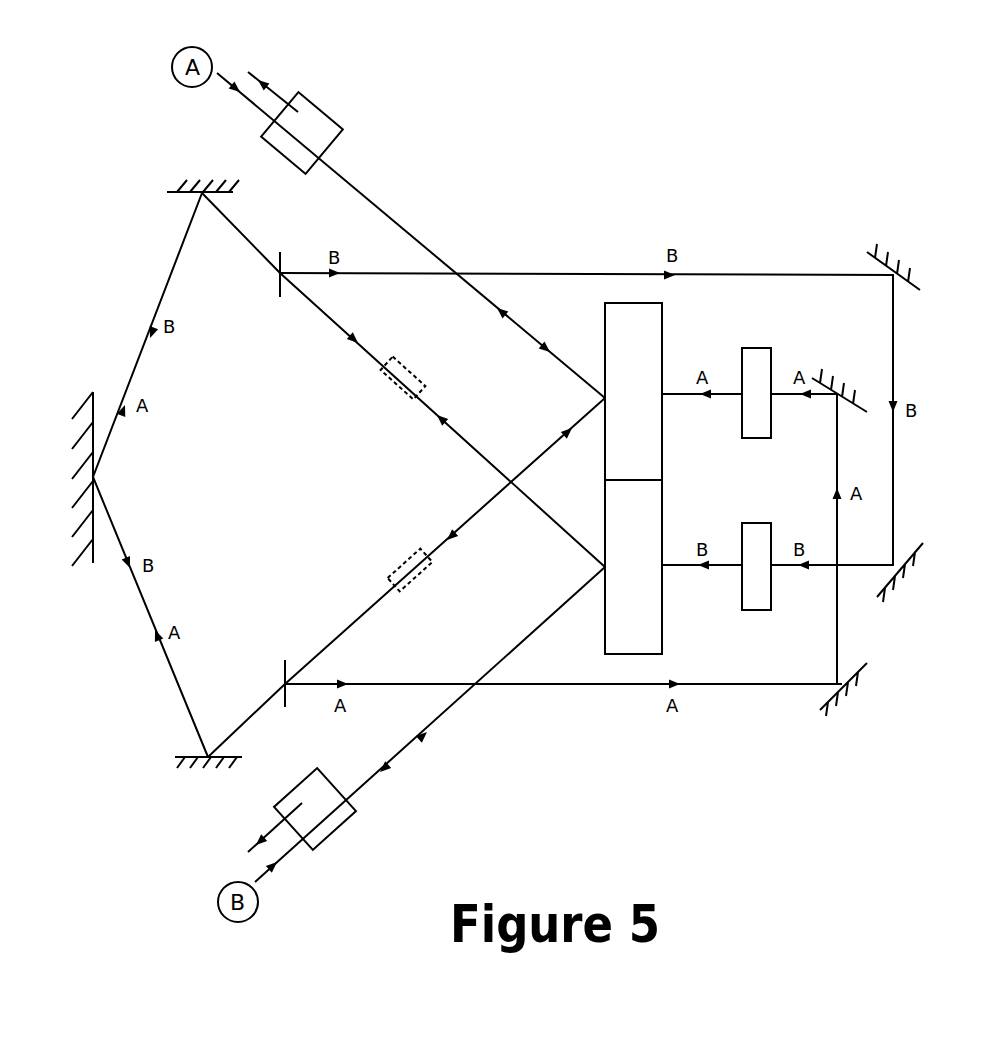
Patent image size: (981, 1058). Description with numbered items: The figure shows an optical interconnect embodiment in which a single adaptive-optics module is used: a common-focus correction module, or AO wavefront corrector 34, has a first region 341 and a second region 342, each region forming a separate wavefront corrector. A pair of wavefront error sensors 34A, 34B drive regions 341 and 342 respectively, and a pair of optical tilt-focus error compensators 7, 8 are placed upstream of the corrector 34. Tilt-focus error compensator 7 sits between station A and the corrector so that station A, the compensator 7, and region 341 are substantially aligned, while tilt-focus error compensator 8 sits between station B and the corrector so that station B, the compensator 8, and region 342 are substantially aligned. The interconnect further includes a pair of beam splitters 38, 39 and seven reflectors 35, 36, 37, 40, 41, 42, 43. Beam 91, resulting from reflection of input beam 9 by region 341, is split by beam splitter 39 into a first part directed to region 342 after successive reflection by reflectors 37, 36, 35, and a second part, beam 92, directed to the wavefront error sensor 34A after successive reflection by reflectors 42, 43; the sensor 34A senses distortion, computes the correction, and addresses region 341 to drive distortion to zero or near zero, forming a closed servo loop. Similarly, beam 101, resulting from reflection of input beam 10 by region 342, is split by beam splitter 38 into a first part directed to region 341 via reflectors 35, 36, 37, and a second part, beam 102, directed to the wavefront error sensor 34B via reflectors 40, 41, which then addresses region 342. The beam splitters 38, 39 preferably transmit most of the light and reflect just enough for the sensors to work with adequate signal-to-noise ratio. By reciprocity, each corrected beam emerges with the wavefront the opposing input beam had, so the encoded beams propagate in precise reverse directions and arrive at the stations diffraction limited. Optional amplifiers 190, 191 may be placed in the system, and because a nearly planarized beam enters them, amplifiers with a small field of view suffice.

The tilt-focus error compensator 7 is at (327, 112).
The tilt-focus error compensator 8 is at (340, 833).
The beam 9 is at (556, 352).
The beam 10 is at (450, 712).
The AO wavefront corrector 34 is at (634, 483).
The first region 341 is at (633, 303).
The second region 342 is at (632, 654).
The wavefront error sensor 34A is at (755, 348).
The wavefront error sensor 34B is at (755, 523).
The reflector 35 is at (167, 192).
The reflector 36 is at (93, 392).
The reflector 37 is at (175, 757).
The beam splitter 38 is at (280, 283).
The beam splitter 39 is at (285, 678).
The reflector 40 is at (910, 282).
The reflector 41 is at (918, 549).
The reflector 42 is at (865, 665).
The reflector 43 is at (865, 412).
The beam 91 is at (370, 356).
The beam 92 is at (350, 684).
The beam 101 is at (500, 310).
The beam 102 is at (348, 273).
The amplifier 190 is at (394, 392).
The amplifier 191 is at (396, 556).